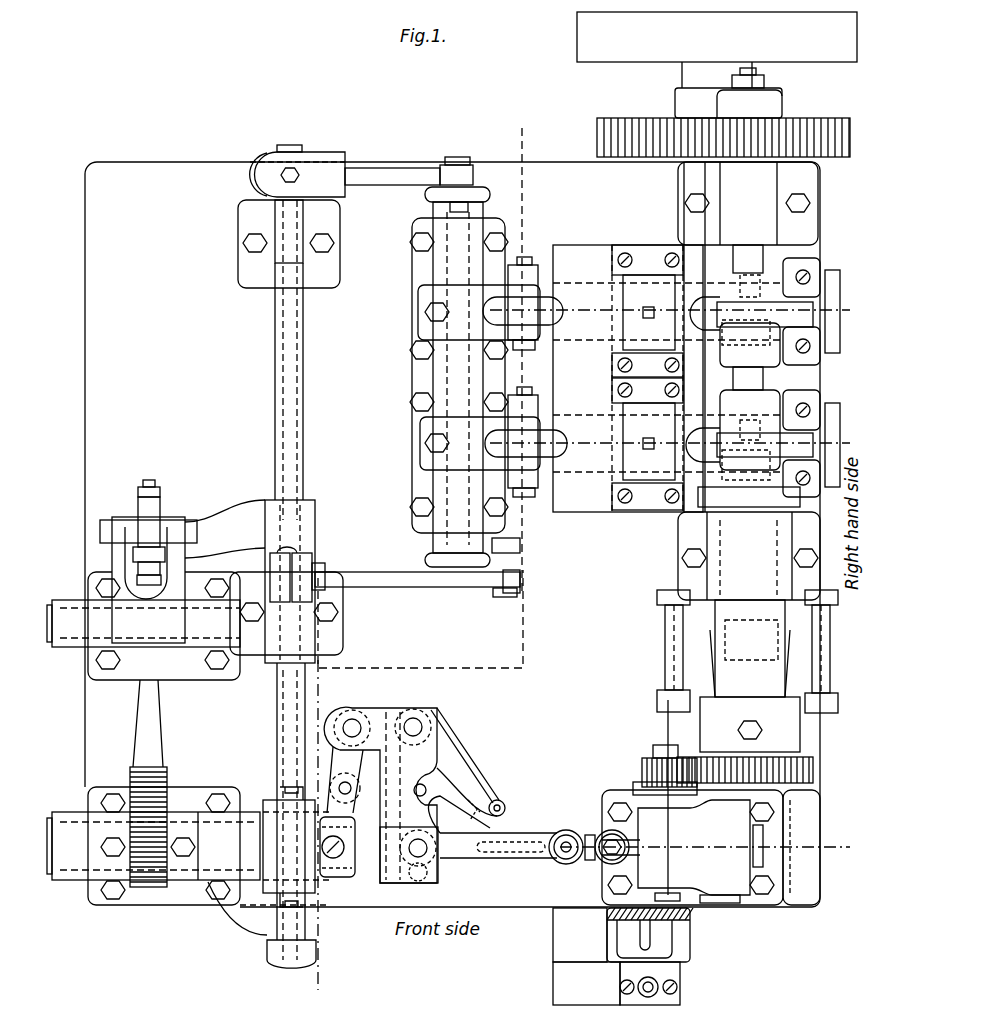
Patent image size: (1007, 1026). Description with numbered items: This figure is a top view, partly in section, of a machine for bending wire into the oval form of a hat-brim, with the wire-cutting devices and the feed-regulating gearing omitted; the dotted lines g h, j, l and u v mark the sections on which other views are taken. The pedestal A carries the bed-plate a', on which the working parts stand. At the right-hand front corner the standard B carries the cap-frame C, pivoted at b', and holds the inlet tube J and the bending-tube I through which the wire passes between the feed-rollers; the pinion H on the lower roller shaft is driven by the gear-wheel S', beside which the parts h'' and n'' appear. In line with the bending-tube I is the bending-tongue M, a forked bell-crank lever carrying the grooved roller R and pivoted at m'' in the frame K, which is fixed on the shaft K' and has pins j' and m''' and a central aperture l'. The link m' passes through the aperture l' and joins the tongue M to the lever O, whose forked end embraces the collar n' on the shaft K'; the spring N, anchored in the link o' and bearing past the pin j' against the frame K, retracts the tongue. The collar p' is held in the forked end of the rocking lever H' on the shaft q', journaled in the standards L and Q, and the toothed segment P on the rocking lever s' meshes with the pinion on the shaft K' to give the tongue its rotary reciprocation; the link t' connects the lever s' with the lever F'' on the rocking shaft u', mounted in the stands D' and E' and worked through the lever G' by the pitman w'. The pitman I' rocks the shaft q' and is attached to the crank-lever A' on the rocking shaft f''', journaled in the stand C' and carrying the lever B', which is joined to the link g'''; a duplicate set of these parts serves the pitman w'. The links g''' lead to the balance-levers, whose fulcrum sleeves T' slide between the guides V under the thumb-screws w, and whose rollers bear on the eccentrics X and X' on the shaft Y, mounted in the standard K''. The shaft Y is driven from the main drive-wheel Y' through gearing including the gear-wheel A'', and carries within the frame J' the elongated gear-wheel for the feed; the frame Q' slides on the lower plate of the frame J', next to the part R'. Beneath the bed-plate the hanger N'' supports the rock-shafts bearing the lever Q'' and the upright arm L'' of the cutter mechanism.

The pedestal A is at (452, 534).
The crank-lever A' is at (513, 370).
The gear-wheel A'' is at (728, 93).
The standard B is at (595, 679).
The lever B' is at (490, 312).
The cap-frame C is at (692, 847).
The stand C' is at (459, 377).
The stand D' is at (289, 244).
The stand E' is at (286, 581).
The lever F'' is at (492, 522).
The lever G' is at (454, 491).
The pinion H is at (651, 770).
The rocking lever H' is at (292, 840).
The bending-tube I is at (654, 818).
The pitman I' is at (417, 585).
The inlet tube J is at (761, 847).
The frame J' is at (750, 676).
The frame K is at (516, 805).
The shaft K' is at (210, 832).
The standard K'' is at (749, 381).
The standard L is at (164, 840).
The upright arm L'' is at (650, 935).
The bending-tongue M is at (498, 852).
The spring N is at (466, 770).
The hanger N'' is at (580, 935).
The lever O is at (345, 780).
The toothed segment P is at (148, 723).
The frame Q is at (164, 626).
The frame Q' is at (661, 651).
The lever Q'' is at (616, 983).
The grooved roller R is at (572, 856).
The bolt R' is at (743, 656).
The gear-wheel S' is at (746, 779).
The sleeve T' is at (649, 377).
The guides V is at (705, 378).
The eccentric X is at (749, 445).
The cam X' is at (751, 313).
The shaft Y is at (750, 362).
The main driving-wheel Y' is at (717, 50).
The bed-plate a' is at (443, 619).
The pivot b' is at (720, 917).
The section line g is at (519, 345).
The link g''' is at (529, 377).
The section line h is at (317, 837).
The gear h'' is at (723, 137).
The section line j is at (705, 847).
The pin j' is at (413, 727).
The section line l is at (663, 797).
The aperture l' is at (359, 814).
The link m' is at (357, 781).
The pivot m'' is at (409, 855).
The pin m''' is at (427, 882).
The collar n' is at (279, 906).
The bracket n'' is at (801, 847).
The link o' is at (471, 802).
The collar p' is at (148, 835).
The shaft q' is at (291, 815).
The rocking lever s' is at (448, 471).
The link t' is at (148, 561).
The section line u is at (491, 310).
The rocking shaft u' is at (289, 360).
The section line v is at (508, 495).
The thumb-screw w is at (815, 381).
The pitman w' is at (409, 171).
The rocking shaft f''' is at (451, 378).